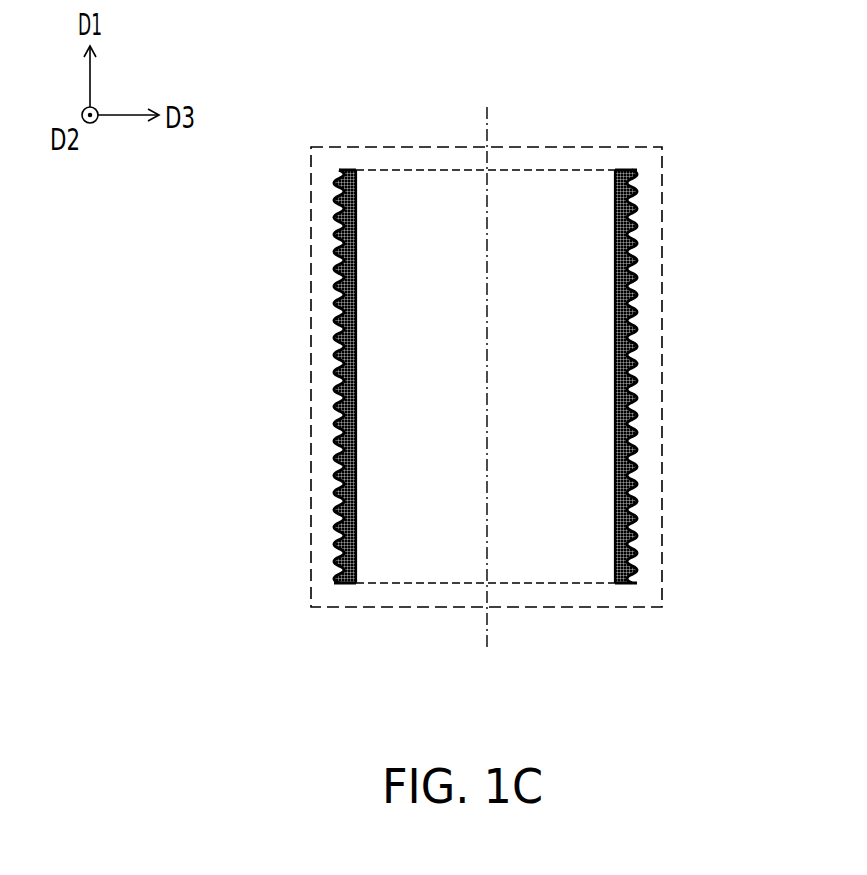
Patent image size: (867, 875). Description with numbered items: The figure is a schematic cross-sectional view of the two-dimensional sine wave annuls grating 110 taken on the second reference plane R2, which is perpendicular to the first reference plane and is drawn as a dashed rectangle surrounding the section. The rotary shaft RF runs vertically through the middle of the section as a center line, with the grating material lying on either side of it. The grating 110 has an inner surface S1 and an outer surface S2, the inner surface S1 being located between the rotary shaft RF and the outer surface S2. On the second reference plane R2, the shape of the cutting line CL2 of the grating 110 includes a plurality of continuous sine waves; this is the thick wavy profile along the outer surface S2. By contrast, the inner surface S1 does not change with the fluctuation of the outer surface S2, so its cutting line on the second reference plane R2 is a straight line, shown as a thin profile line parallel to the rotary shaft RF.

The two-dimensional sine wave annuls grating 110 is at (736, 682).
The second reference plane R2 is at (592, 147).
The rotary shaft RF is at (489, 359).
The cutting line CL2 is at (491, 376).
The inner surface S1 is at (357, 302).
The outer surface S2 is at (349, 298).